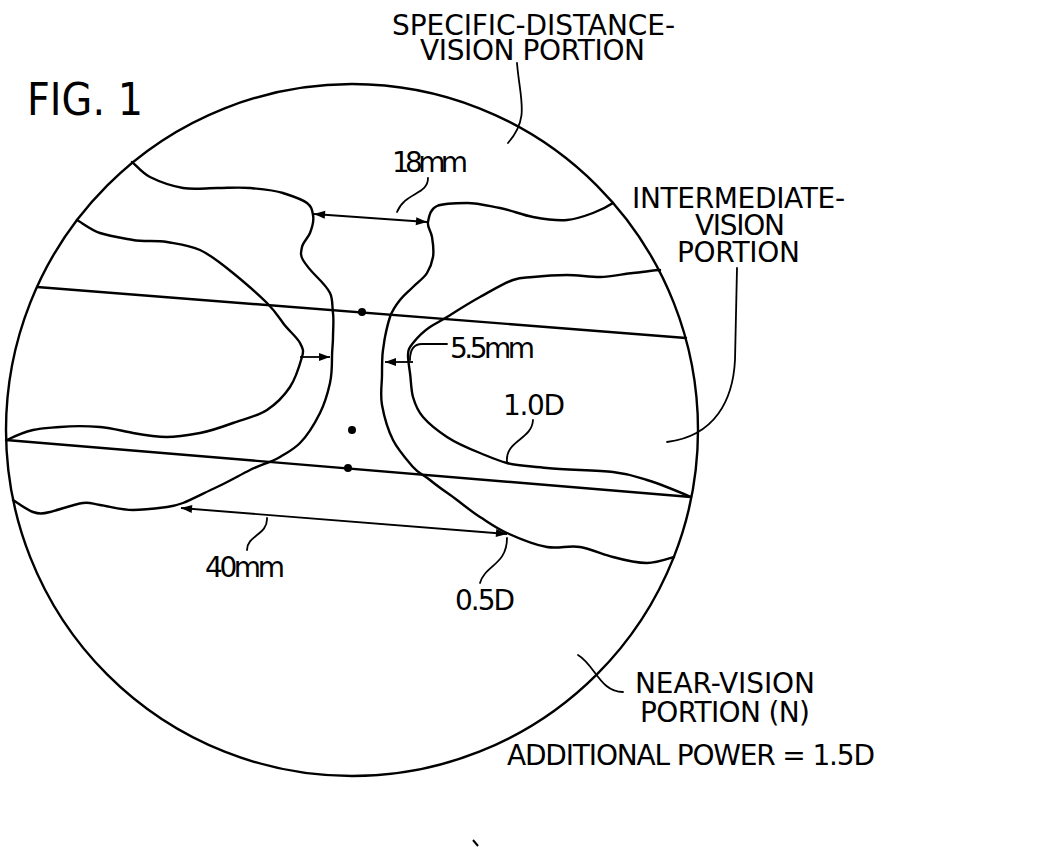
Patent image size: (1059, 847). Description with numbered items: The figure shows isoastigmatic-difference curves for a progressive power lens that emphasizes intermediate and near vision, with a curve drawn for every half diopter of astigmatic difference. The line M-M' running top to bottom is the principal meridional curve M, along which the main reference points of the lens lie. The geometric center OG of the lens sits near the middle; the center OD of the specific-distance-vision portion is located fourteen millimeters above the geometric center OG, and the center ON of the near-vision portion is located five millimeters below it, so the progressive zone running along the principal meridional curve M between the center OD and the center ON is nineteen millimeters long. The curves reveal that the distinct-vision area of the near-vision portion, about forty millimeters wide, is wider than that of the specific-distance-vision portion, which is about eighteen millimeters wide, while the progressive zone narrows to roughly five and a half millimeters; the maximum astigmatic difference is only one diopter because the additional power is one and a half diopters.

The principal meridional curve M is at (323, 777).
The center of the specific-distance-vision portion OD is at (365, 299).
The geometric center of the lens OG is at (355, 416).
The center of the near-vision portion ON is at (348, 485).